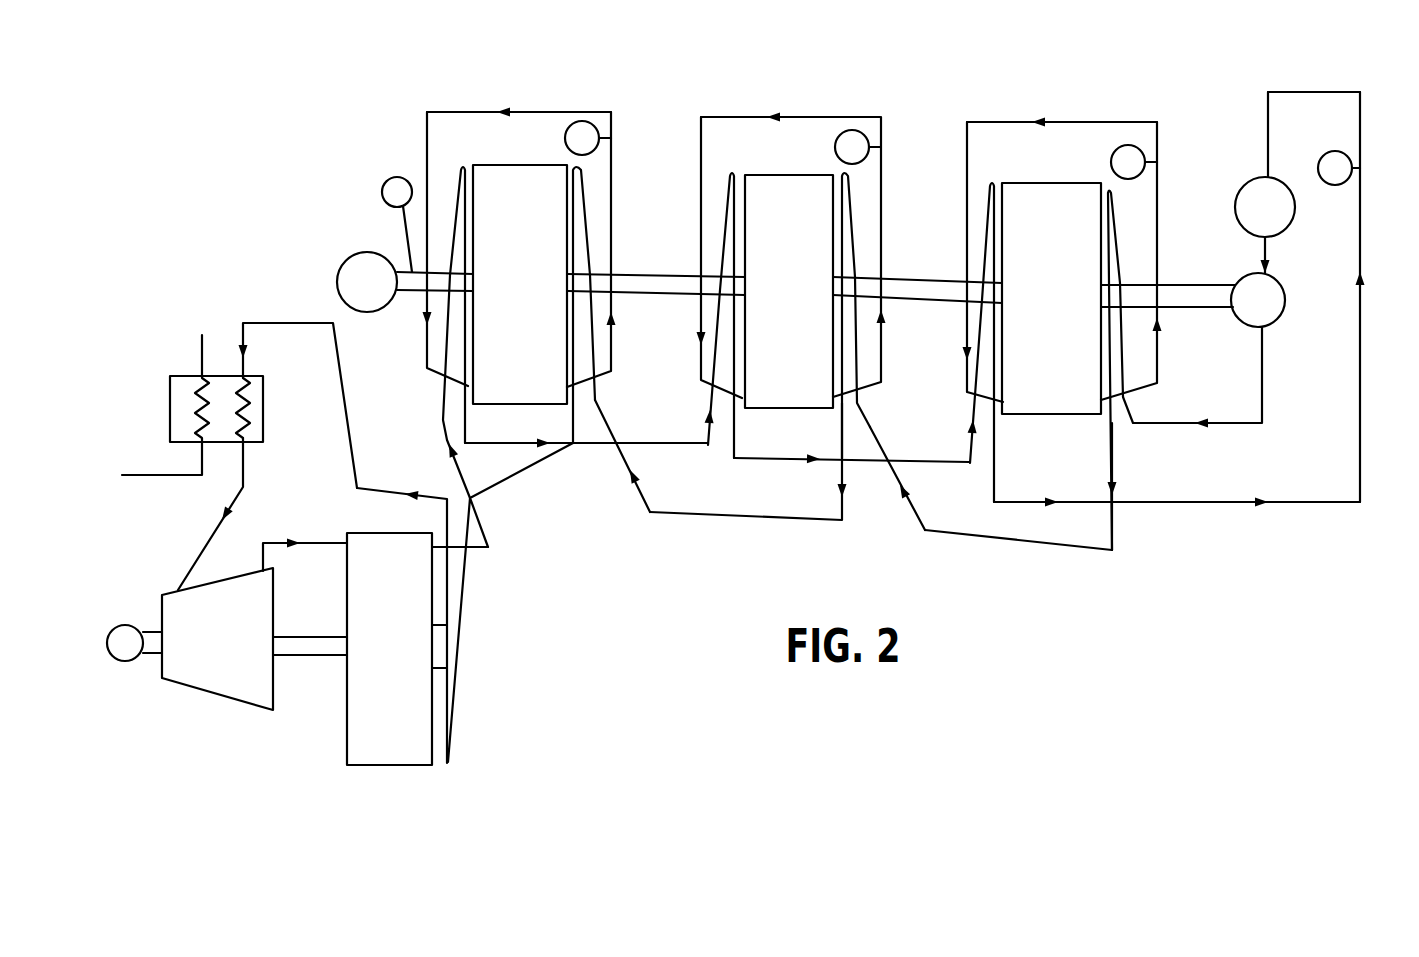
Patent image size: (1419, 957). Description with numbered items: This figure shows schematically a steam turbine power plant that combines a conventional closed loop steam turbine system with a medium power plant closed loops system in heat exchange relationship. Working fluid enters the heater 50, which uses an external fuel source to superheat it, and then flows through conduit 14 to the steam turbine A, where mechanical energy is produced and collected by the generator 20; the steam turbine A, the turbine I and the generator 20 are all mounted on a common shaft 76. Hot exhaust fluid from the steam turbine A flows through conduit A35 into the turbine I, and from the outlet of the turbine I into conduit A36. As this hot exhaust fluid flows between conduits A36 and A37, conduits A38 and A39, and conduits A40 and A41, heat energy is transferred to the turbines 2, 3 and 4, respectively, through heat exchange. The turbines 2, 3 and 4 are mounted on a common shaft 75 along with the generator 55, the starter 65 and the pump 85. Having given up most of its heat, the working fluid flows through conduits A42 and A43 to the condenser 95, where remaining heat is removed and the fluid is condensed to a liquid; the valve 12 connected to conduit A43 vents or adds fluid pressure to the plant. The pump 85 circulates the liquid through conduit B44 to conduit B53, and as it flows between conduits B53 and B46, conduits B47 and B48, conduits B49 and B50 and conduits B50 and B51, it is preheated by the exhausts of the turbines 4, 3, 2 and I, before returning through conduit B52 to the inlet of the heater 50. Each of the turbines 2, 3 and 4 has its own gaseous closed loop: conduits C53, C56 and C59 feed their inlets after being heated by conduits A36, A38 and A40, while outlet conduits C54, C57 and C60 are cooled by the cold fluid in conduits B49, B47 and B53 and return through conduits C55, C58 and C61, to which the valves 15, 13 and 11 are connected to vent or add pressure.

The heater 50 is at (225, 372).
The conduit B52 is at (305, 322).
The conduit B51 is at (348, 465).
The conduit 14 is at (207, 548).
The conduit A35 is at (328, 542).
The generator 20 is at (133, 622).
The steam turbine A is at (217, 639).
The common shaft 76 is at (323, 635).
The turbine I is at (417, 649).
The conduit A36 is at (450, 457).
The conduit B50 is at (495, 487).
The conduit A37 is at (541, 441).
The turbine 2 is at (519, 304).
The conduit C53 is at (427, 357).
The conduit C54 is at (613, 362).
The conduit C55 is at (563, 111).
The valve 15 is at (565, 136).
The starter 65 is at (413, 176).
The generator 55 is at (378, 252).
The conduit B49 is at (616, 437).
The conduit A38 is at (648, 449).
The turbine 3 is at (719, 315).
The conduit C56 is at (700, 355).
The conduit A39 is at (815, 460).
The conduit B48 is at (822, 521).
The valve 13 is at (835, 149).
The conduit C58 is at (826, 116).
The common shaft 75 is at (950, 277).
The conduit C57 is at (883, 356).
The conduit C59 is at (967, 391).
The conduit A40 is at (972, 465).
The turbine 4 is at (1052, 366).
The conduit A41 is at (996, 495).
The conduit B53 is at (1113, 475).
The conduit B47 is at (937, 532).
The conduit B46 is at (1115, 527).
The valve 11 is at (1112, 155).
The conduit C61 is at (1075, 121).
The conduit C60 is at (1160, 370).
The condenser 95 is at (1258, 177).
The pump 85 is at (1250, 274).
The valve 12 is at (1340, 150).
The conduit A43 is at (1340, 91).
The conduit A42 is at (1362, 375).
The conduit B44 is at (1265, 378).